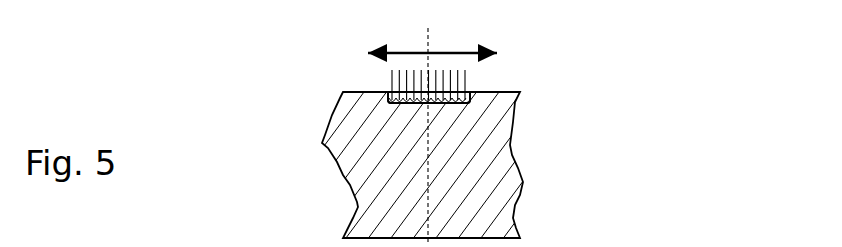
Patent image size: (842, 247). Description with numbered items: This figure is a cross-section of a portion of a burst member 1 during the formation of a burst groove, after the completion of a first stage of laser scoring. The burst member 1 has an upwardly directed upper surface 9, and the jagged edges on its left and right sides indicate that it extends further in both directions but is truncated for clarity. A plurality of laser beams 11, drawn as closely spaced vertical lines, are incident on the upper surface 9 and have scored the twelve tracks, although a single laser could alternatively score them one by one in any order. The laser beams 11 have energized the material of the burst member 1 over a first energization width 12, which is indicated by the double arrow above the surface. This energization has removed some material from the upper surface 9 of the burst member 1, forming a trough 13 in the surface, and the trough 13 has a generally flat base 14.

The burst member 1 is at (513, 208).
The upper surface 9 is at (518, 94).
The laser beams 11 is at (393, 83).
The first energization width 12 is at (492, 51).
The trough 13 is at (388, 102).
The flat base 14 is at (417, 105).